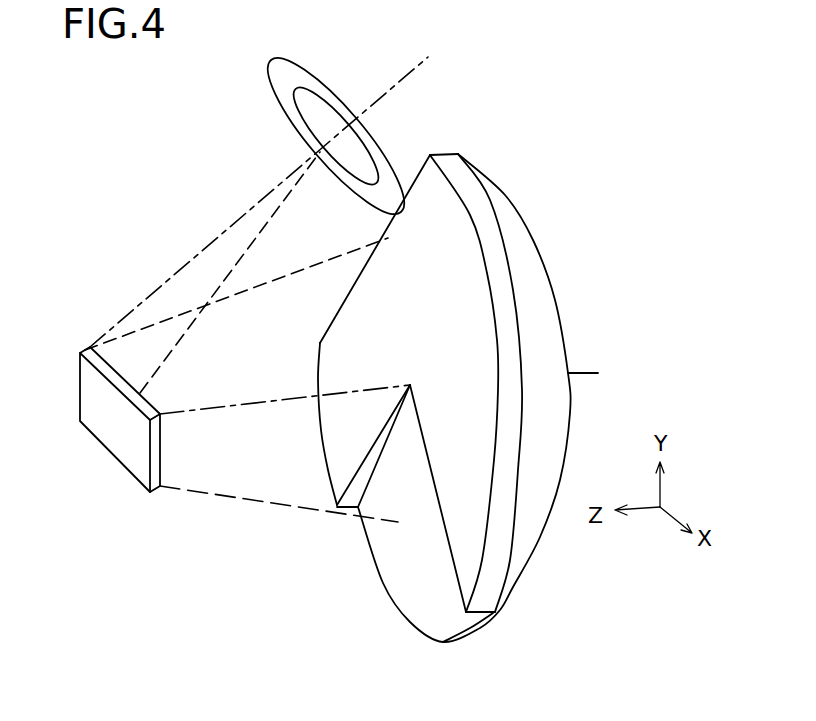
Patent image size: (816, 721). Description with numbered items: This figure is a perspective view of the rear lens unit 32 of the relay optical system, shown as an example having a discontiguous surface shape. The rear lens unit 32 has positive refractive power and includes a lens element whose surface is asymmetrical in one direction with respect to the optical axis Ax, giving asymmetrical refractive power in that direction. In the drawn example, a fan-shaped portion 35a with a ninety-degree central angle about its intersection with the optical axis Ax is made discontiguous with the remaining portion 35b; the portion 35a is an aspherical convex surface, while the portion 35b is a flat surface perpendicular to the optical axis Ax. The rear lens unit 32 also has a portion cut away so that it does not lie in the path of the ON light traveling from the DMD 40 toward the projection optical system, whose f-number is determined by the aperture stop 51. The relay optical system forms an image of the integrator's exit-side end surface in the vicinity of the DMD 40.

The rear lens unit 32 is at (432, 399).
The fan-shaped portion 35a is at (392, 590).
The remaining portion 35b is at (338, 317).
The DMD 40 is at (128, 455).
The aperture stop 51 is at (283, 85).
The optical axis Ax is at (585, 373).